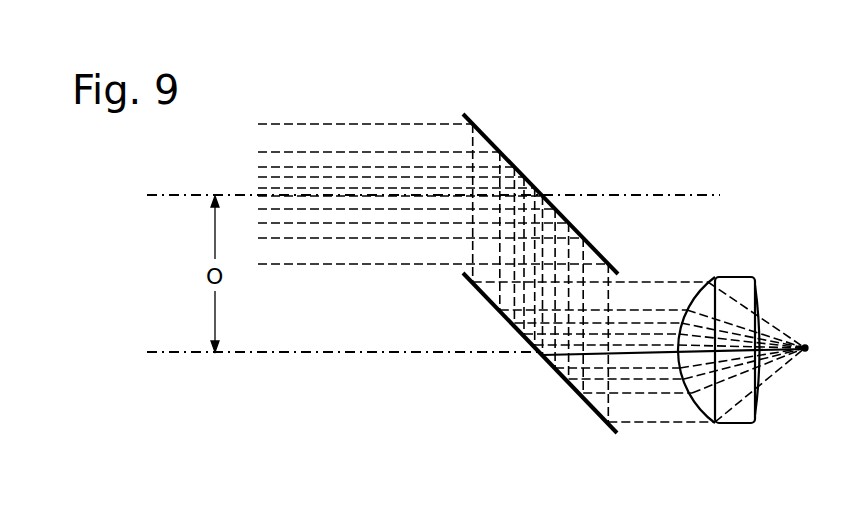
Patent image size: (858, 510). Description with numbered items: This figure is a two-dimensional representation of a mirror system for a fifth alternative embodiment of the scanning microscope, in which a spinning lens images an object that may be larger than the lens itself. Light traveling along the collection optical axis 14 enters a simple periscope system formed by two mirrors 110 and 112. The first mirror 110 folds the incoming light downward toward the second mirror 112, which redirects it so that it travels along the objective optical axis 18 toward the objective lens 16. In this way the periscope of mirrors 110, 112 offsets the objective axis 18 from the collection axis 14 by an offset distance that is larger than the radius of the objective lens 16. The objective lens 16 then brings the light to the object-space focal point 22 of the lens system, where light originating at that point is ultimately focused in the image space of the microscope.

The collection optical axis 14 is at (185, 194).
The objective optical axis 18 is at (310, 354).
The mirror 110 is at (533, 180).
The mirror 112 is at (587, 413).
The objective lens 16 is at (735, 424).
The object-space focal point 22 is at (812, 350).